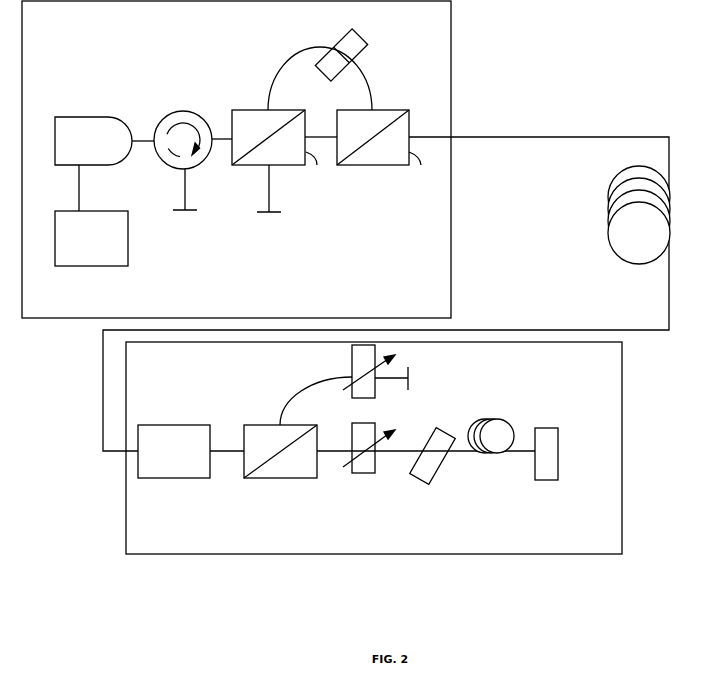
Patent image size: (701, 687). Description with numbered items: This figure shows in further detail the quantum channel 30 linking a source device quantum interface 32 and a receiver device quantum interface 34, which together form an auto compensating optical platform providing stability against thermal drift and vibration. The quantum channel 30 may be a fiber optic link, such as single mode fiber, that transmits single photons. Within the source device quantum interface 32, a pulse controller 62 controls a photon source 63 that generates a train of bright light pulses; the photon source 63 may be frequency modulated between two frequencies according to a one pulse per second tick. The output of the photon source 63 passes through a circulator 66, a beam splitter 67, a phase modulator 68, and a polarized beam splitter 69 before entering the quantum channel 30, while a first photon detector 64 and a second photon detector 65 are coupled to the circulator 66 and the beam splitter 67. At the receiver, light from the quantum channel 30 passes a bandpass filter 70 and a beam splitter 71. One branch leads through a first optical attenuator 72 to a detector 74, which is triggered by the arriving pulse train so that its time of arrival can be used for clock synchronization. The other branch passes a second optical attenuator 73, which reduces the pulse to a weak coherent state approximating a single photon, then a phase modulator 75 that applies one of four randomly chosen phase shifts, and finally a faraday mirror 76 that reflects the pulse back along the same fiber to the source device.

The quantum channel 30 is at (538, 137).
The source device quantum interface 32 is at (451, 58).
The receiver device quantum interface 34 is at (622, 390).
The pulse controller 62 is at (88, 266).
The photon source 63 is at (114, 162).
The first photon detector 64 is at (189, 212).
The second photon detector 65 is at (279, 210).
The circulator 66 is at (210, 155).
The beam splitter 67 is at (277, 109).
The phase modulator 68 is at (364, 47).
The polarized beam splitter 69 is at (387, 109).
The bandpass filter 70 is at (191, 467).
The beam splitter 71 is at (389, 467).
The first optical attenuator 72 is at (352, 362).
The second optical attenuator 73 is at (371, 474).
The detector 74 is at (410, 368).
The phase modulator 75 is at (462, 466).
The faraday mirror 76 is at (539, 428).